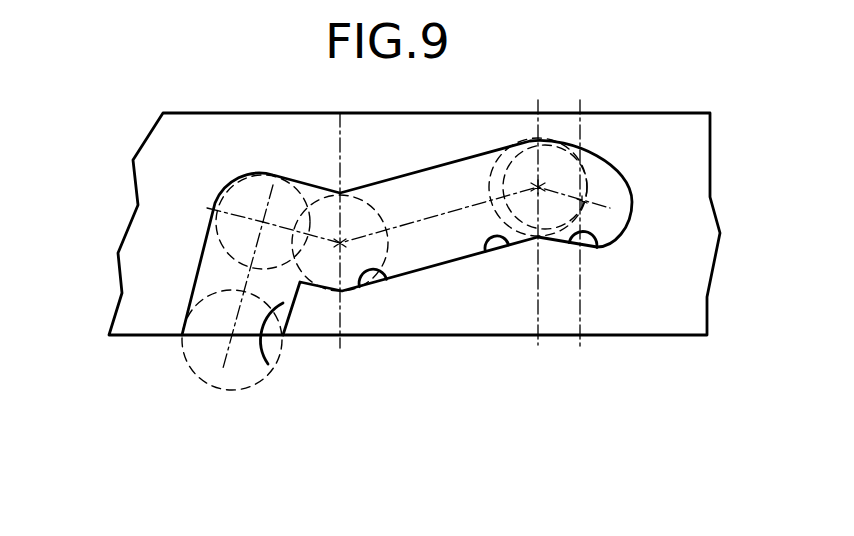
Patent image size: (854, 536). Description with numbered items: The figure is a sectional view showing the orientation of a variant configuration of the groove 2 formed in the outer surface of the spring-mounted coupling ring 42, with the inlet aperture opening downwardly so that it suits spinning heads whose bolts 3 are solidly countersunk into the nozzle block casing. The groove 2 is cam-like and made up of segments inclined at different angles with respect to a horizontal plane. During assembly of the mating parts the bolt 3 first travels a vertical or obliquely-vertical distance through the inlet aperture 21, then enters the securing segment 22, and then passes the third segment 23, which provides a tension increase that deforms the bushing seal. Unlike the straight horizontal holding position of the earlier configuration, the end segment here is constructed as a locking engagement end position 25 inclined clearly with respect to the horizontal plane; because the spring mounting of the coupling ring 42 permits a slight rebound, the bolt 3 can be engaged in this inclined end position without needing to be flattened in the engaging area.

The groove 2 is at (461, 292).
The bolt 3 is at (237, 181).
The inlet aperture 21 is at (268, 364).
The securing segment 22 is at (389, 277).
The third segment 23 is at (507, 255).
The locking engagement end position 25 is at (597, 248).
The coupling ring 42 is at (233, 137).